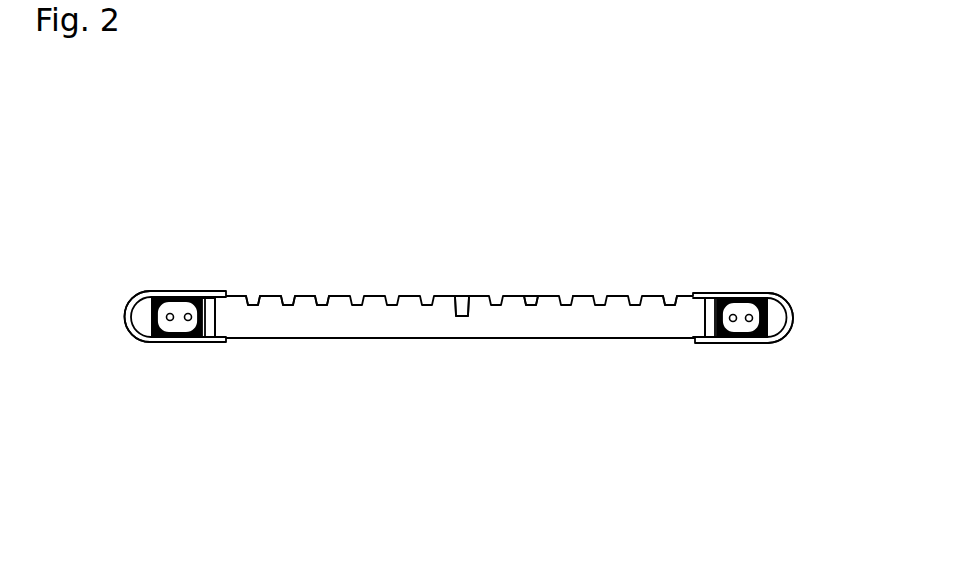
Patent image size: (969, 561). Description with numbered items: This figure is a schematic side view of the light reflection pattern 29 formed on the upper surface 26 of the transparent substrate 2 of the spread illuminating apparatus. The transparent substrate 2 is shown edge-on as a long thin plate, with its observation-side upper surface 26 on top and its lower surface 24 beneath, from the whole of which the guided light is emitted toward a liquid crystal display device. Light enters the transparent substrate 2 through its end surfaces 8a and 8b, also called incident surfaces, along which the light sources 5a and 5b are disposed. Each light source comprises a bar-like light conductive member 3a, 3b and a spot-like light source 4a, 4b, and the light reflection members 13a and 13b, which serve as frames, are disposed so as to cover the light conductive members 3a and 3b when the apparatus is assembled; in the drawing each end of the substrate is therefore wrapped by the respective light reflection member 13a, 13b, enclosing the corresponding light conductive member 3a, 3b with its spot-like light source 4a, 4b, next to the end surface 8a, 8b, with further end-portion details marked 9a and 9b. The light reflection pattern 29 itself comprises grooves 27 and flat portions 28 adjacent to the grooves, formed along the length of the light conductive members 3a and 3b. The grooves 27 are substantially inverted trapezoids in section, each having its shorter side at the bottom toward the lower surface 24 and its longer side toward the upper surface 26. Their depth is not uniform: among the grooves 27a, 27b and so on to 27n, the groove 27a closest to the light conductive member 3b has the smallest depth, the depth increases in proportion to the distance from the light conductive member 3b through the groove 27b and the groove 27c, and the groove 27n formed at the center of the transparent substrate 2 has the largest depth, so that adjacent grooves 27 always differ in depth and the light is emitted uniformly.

The transparent substrate 2 is at (388, 322).
The lower surface 24 is at (535, 340).
The upper surface 26 is at (586, 297).
The light reflection pattern 29 is at (588, 166).
The grooves 27 is at (461, 304).
The flat portions 28 is at (531, 300).
The groove 27a is at (254, 297).
The groove 27b is at (291, 297).
The groove 27c is at (325, 297).
The groove 27n is at (670, 300).
The light reflection member 13b is at (126, 310).
The light reflection member 13a is at (794, 325).
The light source 5b is at (230, 428).
The light conductive member 3b is at (191, 338).
The spot-like light source 4b is at (175, 325).
The end surface 8b is at (215, 304).
The left retaining plate 9b is at (216, 328).
The light source 5a is at (790, 403).
The light conductive member 3a is at (757, 338).
The spot-like light source 4a is at (740, 325).
The end surface 8a is at (705, 316).
The right retaining plate 9a is at (703, 322).